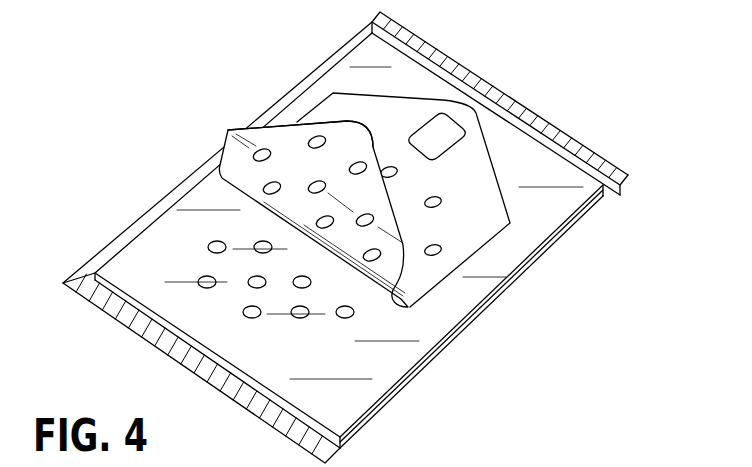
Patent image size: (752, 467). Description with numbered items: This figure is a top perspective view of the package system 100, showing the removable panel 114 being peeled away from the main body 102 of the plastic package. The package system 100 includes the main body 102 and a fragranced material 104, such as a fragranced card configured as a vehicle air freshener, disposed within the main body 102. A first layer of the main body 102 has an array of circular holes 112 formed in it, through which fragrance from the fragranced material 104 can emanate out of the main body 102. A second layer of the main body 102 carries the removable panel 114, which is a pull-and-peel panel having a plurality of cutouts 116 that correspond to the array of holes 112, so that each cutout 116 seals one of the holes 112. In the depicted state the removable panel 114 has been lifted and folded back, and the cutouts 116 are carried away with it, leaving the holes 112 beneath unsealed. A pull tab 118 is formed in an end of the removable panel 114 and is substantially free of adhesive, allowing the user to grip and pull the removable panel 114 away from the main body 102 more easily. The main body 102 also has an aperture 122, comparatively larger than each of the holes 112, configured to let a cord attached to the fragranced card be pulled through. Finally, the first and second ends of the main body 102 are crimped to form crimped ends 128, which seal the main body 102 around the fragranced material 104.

The package system 100 is at (378, 233).
The main body 102 is at (622, 184).
The fragranced material 104 is at (558, 218).
The holes 112 is at (216, 241).
The removable panel 114 is at (368, 192).
The cutouts 116 is at (262, 149).
The pull tab 118 is at (360, 120).
The aperture 122 is at (449, 127).
The crimped ends 128 is at (513, 97).